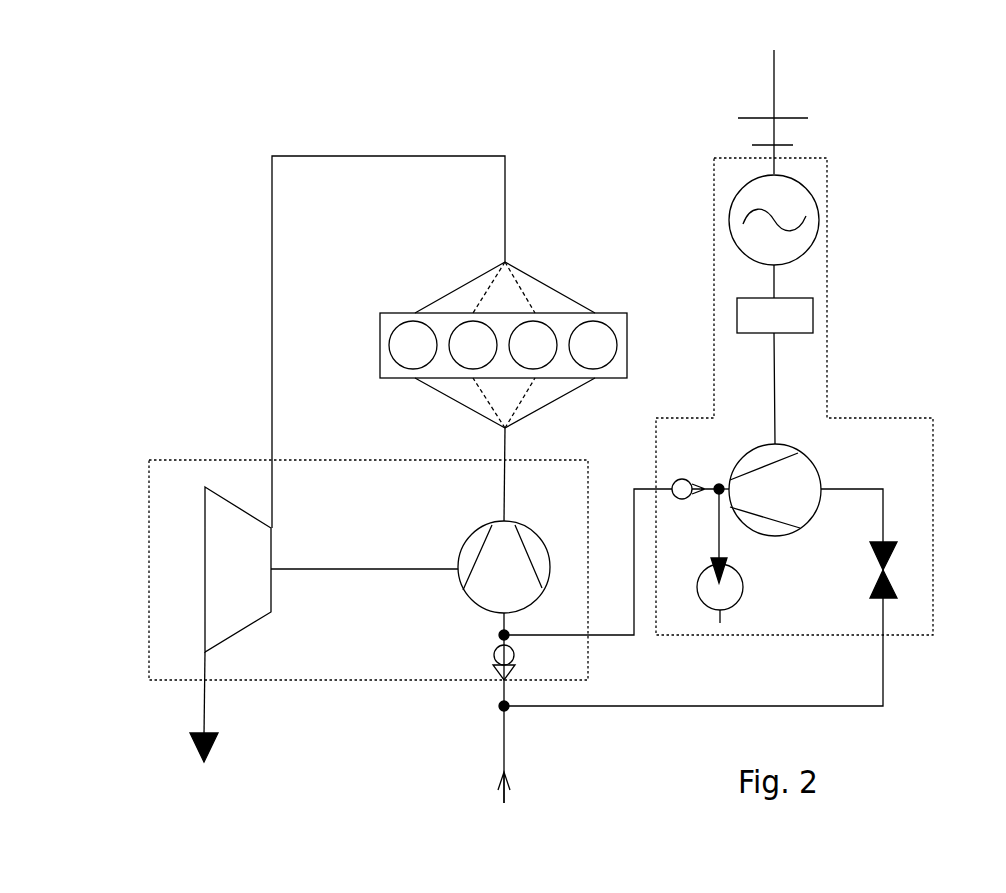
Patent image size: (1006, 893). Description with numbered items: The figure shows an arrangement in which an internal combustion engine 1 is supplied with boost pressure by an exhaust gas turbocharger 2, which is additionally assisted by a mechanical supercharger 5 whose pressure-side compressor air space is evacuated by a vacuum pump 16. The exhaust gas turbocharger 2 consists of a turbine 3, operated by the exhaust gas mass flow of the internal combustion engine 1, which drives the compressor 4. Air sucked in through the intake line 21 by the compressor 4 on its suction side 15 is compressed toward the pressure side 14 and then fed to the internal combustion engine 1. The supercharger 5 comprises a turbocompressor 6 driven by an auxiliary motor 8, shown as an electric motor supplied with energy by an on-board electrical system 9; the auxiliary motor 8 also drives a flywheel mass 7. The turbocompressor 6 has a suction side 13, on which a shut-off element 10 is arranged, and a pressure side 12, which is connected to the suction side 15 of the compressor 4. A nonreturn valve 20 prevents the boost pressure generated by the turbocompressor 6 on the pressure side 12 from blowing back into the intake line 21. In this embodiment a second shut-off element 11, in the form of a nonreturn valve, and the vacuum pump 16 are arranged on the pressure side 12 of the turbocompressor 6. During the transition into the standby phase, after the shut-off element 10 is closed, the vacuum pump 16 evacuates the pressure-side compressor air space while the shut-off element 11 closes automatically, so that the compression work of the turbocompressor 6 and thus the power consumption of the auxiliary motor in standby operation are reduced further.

The internal combustion engine 1 is at (380, 337).
The exhaust gas turbocharger 2 is at (288, 680).
The turbine 3 is at (205, 542).
The compressor 4 is at (480, 608).
The supercharger 5 is at (827, 263).
The turbocompressor 6 is at (770, 538).
The flywheel mass 7 is at (813, 315).
The auxiliary motor 8 is at (732, 210).
The on-board electrical system 9 is at (798, 107).
The shut-off element 10 is at (883, 570).
The second shut-off element 11 is at (673, 497).
The pressure side 12 is at (720, 483).
The suction side 13 is at (855, 488).
The pressure side 14 is at (503, 505).
The suction side 15 is at (512, 643).
The vacuum pump 16 is at (733, 607).
The nonreturn valve 20 is at (492, 667).
The intake line 21 is at (502, 767).